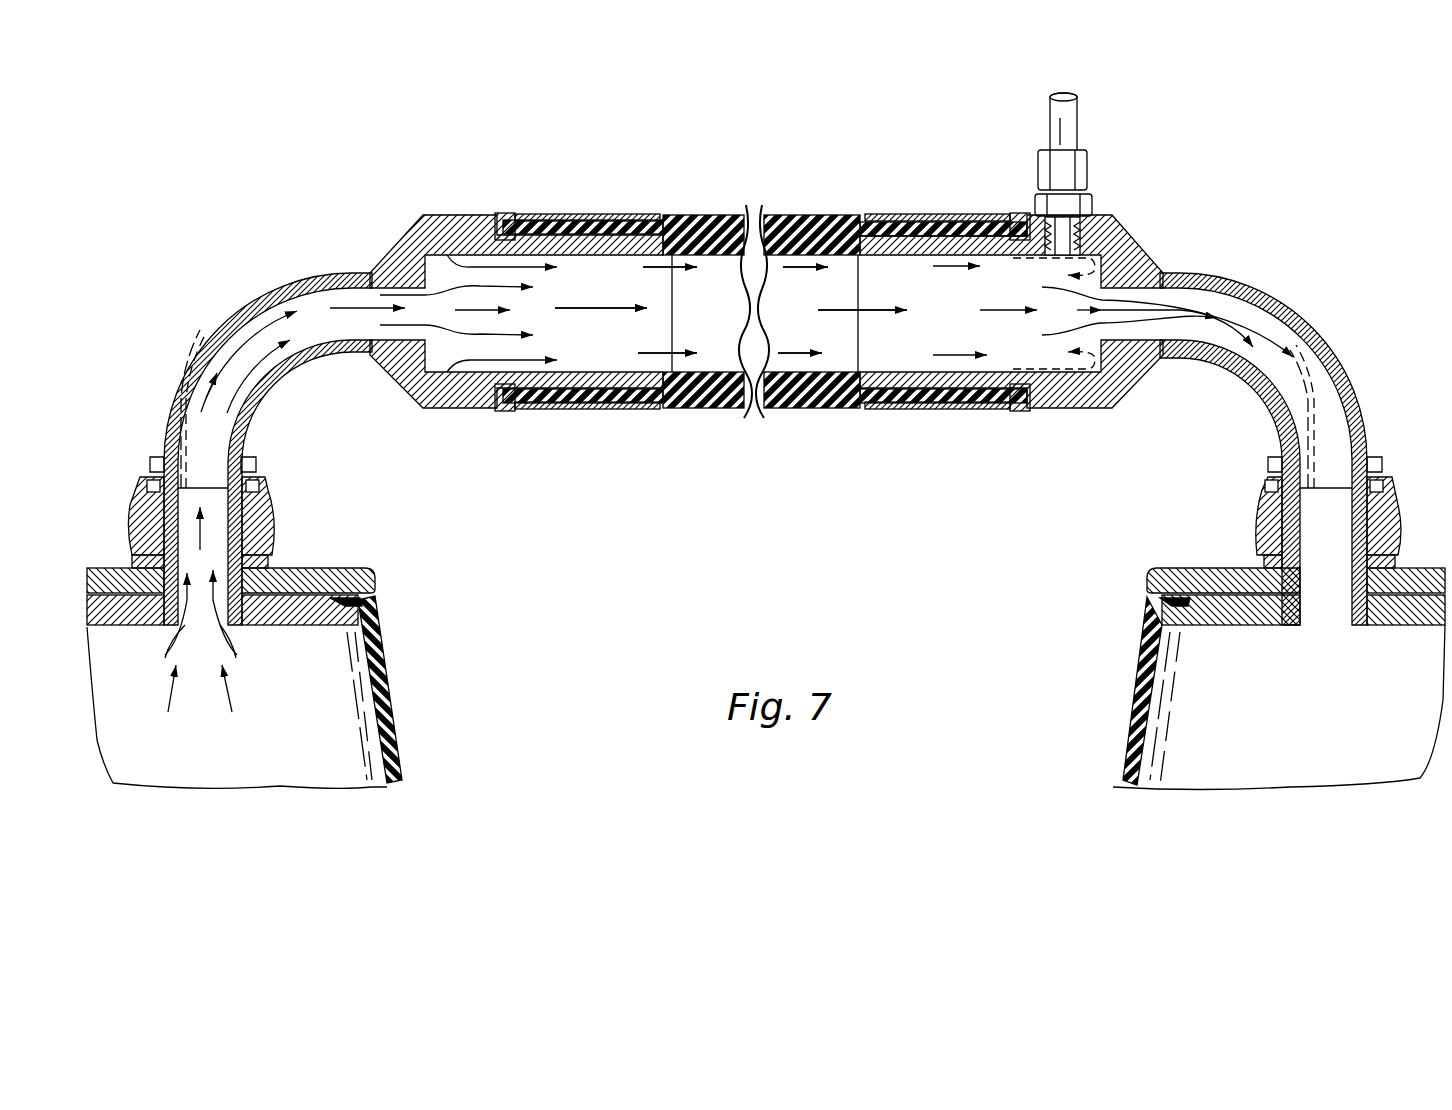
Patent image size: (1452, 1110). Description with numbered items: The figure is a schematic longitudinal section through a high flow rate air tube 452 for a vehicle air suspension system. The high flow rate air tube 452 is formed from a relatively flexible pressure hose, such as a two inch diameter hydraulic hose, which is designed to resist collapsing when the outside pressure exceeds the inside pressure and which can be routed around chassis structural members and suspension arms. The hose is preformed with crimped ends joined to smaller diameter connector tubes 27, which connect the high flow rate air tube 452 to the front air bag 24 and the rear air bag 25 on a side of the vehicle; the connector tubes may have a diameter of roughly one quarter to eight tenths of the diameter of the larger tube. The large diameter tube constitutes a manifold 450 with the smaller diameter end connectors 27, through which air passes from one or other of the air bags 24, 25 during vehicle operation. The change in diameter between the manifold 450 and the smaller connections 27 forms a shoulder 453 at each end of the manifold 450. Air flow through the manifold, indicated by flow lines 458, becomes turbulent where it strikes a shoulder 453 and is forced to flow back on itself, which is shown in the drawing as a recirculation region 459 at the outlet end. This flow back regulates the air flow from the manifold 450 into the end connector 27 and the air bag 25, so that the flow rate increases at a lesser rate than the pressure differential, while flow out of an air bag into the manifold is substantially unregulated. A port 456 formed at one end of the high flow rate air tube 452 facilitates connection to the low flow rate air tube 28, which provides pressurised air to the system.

The front air bag 24 is at (208, 743).
The rear air bag 25 is at (1321, 738).
The connector tube 27 is at (243, 305).
The low flow rate air tube 28 is at (1080, 125).
The manifold 450 is at (733, 428).
The high flow rate air tube 452 is at (700, 210).
The shoulder 453 is at (458, 255).
The port 456 is at (1115, 228).
The flow lines 458 is at (478, 310).
The recirculation zone 459 is at (1053, 372).